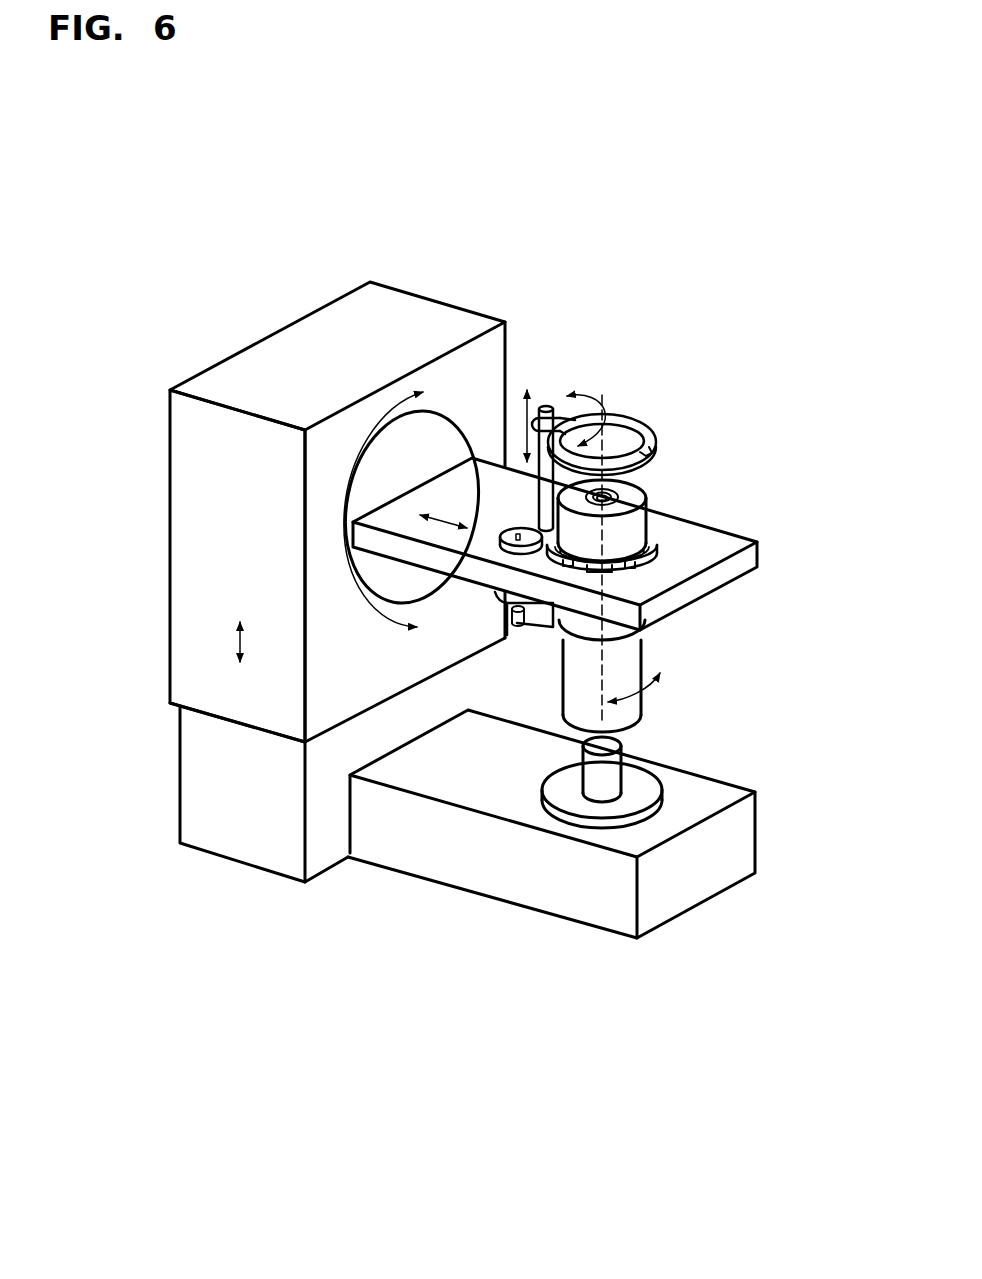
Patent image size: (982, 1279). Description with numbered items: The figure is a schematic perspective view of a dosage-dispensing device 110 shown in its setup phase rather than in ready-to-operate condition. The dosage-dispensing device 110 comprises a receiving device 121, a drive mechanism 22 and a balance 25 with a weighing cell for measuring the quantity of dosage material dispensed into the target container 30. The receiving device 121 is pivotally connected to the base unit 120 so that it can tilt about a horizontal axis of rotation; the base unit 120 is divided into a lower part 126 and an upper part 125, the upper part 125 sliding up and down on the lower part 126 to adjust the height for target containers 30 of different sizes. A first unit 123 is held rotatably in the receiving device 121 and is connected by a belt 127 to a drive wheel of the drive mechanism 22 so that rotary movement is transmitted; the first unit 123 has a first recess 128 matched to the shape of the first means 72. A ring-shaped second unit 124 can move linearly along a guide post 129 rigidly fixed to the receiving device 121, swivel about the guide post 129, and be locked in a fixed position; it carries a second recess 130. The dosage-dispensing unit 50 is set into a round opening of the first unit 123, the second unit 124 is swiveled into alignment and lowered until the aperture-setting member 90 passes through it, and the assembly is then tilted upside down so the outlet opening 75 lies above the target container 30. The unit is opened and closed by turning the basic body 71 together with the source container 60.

The base unit 120 is at (198, 347).
The upper part 125 is at (238, 535).
The lower part 126 is at (242, 802).
The balance 25 is at (705, 833).
The target container 30 is at (602, 773).
The receiving device 121 is at (458, 503).
The guide post 129 is at (545, 405).
The second unit 124 is at (648, 428).
The second recess 130 is at (660, 452).
The dosage-dispensing device 110 is at (575, 292).
The outlet opening 75 is at (620, 492).
The aperture-setting member 90 is at (615, 535).
The basic body 71 is at (650, 537).
The first unit 123 is at (657, 548).
The first recess 128 is at (660, 561).
The first means 72 is at (587, 563).
The dosage-dispensing unit 50 is at (645, 648).
The source container 60 is at (627, 703).
The drive mechanism 22 is at (502, 596).
The belt 127 is at (540, 623).